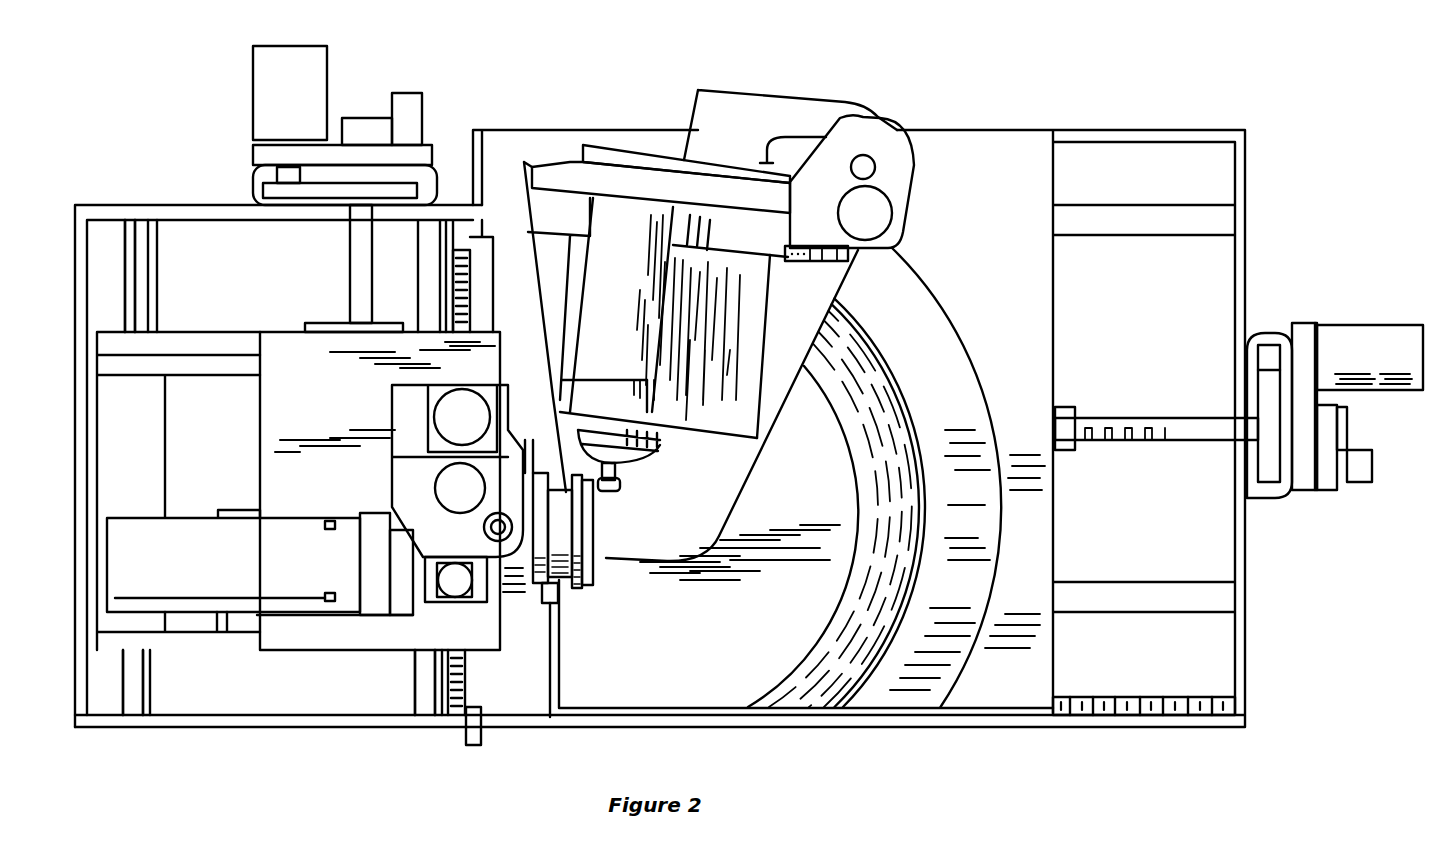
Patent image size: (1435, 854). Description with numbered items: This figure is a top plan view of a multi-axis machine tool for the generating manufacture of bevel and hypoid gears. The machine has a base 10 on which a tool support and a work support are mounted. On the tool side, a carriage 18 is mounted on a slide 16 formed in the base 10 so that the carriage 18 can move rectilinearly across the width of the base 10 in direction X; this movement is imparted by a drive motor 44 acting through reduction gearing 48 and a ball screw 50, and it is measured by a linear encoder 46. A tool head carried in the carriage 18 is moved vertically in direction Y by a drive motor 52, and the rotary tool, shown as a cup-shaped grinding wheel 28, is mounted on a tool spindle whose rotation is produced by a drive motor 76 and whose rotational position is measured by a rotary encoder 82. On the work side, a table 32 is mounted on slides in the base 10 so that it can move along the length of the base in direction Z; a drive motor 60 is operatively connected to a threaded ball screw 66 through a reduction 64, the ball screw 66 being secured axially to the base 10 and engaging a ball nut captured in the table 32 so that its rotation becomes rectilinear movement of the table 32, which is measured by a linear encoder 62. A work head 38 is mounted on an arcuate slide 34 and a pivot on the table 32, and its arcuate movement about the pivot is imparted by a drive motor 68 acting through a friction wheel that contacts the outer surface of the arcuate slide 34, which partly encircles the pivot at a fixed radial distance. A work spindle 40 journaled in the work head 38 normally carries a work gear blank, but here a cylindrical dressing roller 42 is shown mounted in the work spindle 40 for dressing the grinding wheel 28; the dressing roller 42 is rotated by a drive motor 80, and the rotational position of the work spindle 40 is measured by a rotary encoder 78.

The base 10 is at (1136, 303).
The slide 16 is at (423, 687).
The carriage 18 is at (301, 381).
The cup-shaped grinding wheel 28 is at (590, 578).
The table 32 is at (973, 303).
The arcuate slide 34 is at (947, 595).
The work head 38 is at (733, 416).
The work spindle 40 is at (653, 445).
The cylindrical dressing roller 42 is at (618, 483).
The drive motor 44 is at (279, 99).
The linear encoder 46 is at (463, 687).
The reduction gearing 48 is at (345, 192).
The ball screw 50 is at (367, 250).
The drive motor 52 is at (448, 430).
The drive motor 60 is at (1358, 358).
The linear encoder 62 is at (1218, 708).
The reduction 64 is at (1270, 459).
The threaded ball screw 66 is at (1172, 425).
The drive motor 68 is at (877, 220).
The drive motor 76 is at (231, 566).
The rotary encoder 78 is at (588, 408).
The drive motor 80 is at (600, 295).
The rotary encoder 82 is at (372, 597).